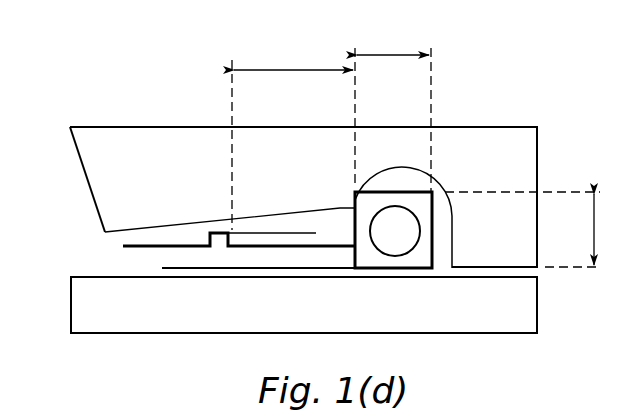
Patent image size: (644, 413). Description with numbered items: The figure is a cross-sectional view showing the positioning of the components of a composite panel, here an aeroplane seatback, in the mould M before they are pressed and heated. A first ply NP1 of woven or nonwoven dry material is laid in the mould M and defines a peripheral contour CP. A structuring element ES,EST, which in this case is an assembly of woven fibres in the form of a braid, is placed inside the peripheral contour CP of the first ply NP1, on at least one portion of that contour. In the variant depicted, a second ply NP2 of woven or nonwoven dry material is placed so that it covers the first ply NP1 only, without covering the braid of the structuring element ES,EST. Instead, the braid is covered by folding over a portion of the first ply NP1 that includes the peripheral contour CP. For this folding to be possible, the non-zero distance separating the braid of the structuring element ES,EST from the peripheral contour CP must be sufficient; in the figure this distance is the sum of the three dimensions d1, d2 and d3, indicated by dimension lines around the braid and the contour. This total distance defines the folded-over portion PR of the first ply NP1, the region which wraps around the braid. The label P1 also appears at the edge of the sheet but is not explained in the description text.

The first pressing plate P1 is at (36, 0).
The mould M is at (540, 154).
The second ply NP2 is at (157, 243).
The peripheral contour CP is at (230, 245).
The first ply NP1 is at (250, 279).
The portion of the first ply which is folded over PR is at (352, 207).
The structuring element / braid ES,EST is at (403, 244).
The distance d1 is at (531, 229).
The distance d2 is at (394, 109).
The distance d3 is at (293, 136).